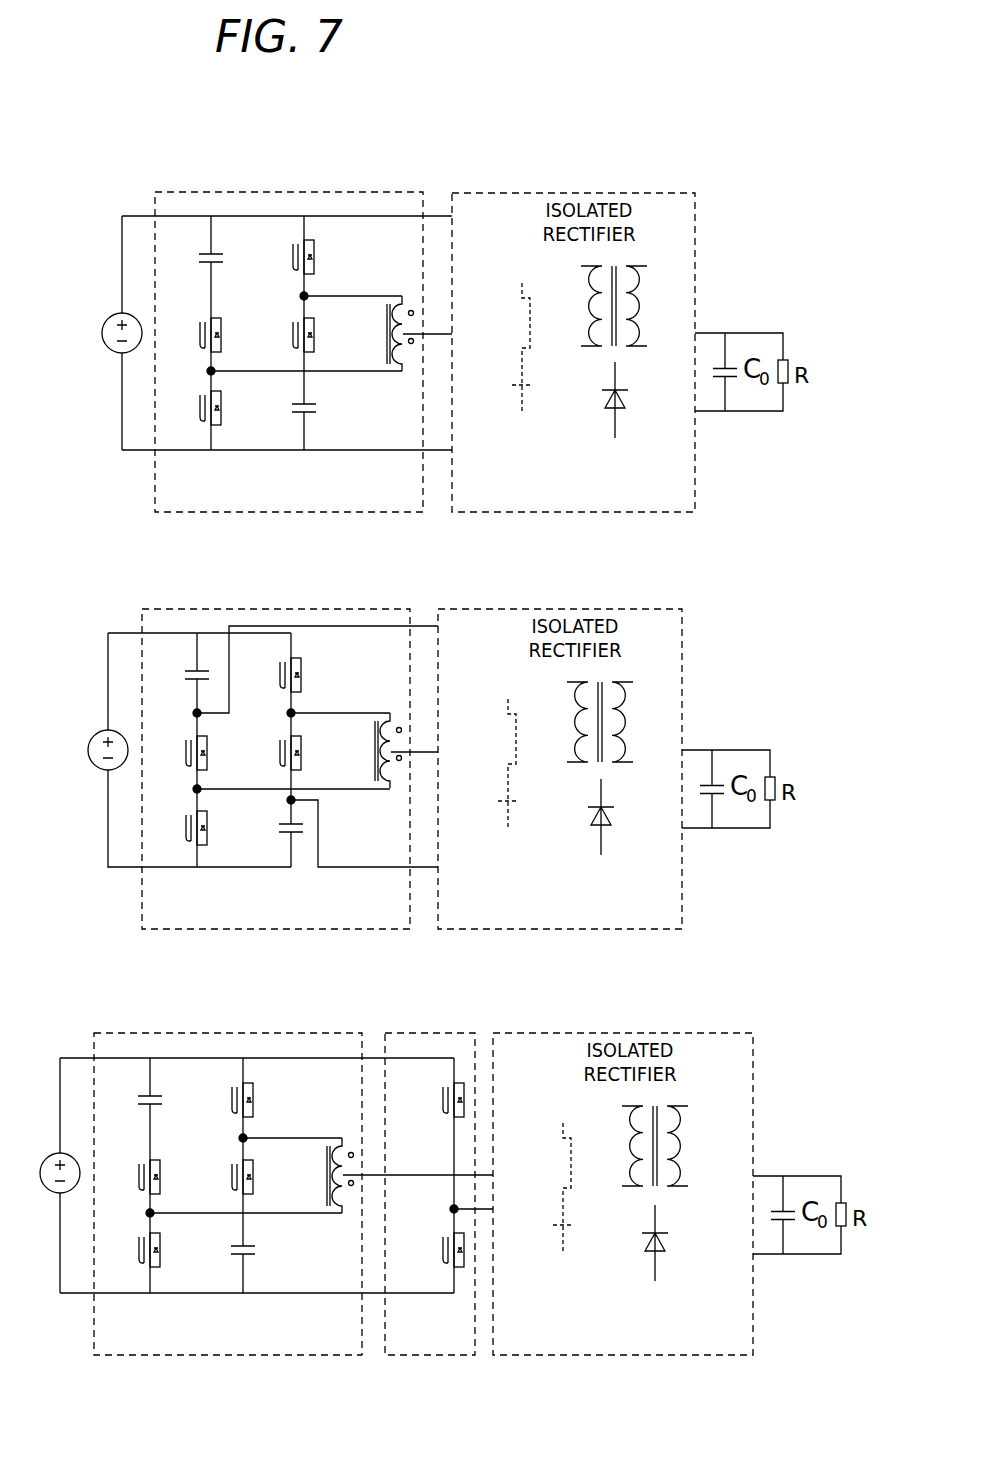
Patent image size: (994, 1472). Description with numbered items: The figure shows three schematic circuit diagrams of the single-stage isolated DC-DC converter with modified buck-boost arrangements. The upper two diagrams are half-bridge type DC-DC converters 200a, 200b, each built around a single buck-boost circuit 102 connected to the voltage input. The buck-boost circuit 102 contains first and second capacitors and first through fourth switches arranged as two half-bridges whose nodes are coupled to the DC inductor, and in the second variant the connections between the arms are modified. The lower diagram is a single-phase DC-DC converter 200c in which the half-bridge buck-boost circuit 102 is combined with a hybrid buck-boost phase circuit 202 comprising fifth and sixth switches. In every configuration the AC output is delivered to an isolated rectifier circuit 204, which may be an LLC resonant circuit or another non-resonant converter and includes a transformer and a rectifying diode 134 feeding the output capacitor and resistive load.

The buck-boost circuit 102 is at (262, 186).
The half-bridge type DC-DC converter 200a is at (726, 183).
The half-bridge type DC-DC converter 200b is at (728, 596).
The single-phase DC-DC converter 200c is at (775, 1031).
The hybrid buck-boost phase circuit 202 is at (432, 1352).
The isolated rectifier circuit 204 is at (703, 260).
The rectifying diode 134 is at (617, 422).